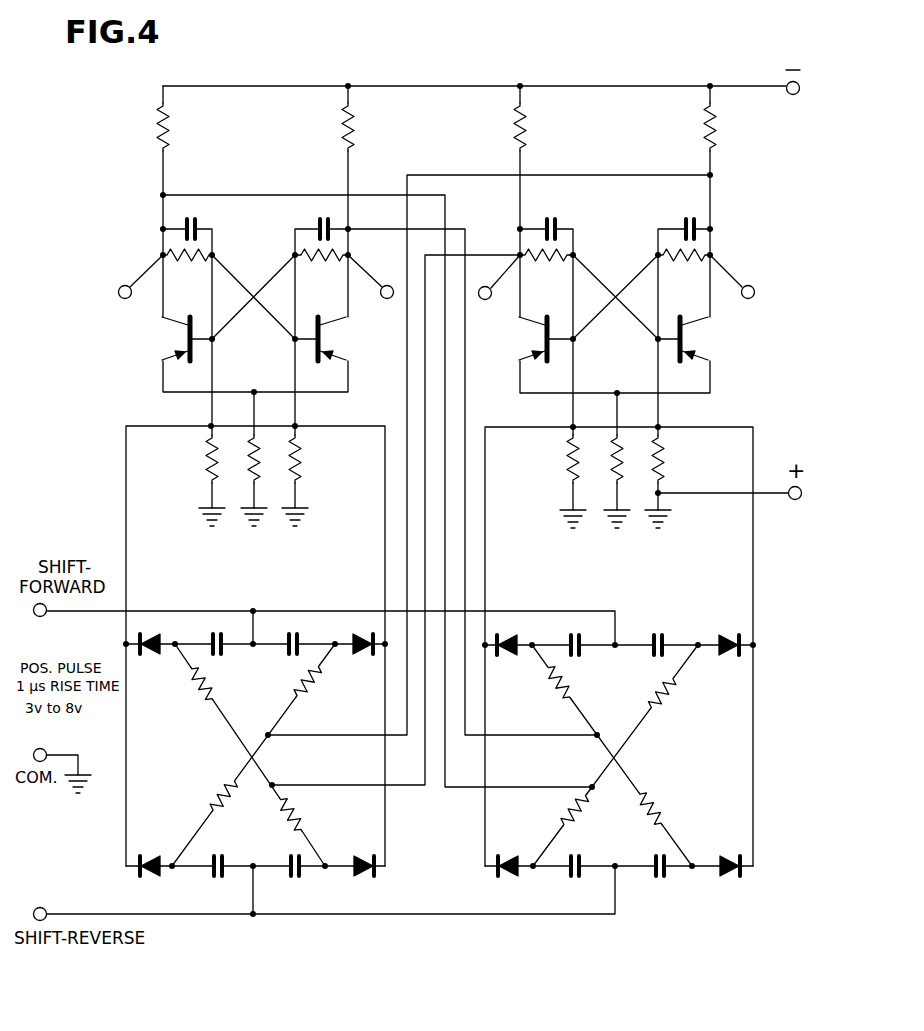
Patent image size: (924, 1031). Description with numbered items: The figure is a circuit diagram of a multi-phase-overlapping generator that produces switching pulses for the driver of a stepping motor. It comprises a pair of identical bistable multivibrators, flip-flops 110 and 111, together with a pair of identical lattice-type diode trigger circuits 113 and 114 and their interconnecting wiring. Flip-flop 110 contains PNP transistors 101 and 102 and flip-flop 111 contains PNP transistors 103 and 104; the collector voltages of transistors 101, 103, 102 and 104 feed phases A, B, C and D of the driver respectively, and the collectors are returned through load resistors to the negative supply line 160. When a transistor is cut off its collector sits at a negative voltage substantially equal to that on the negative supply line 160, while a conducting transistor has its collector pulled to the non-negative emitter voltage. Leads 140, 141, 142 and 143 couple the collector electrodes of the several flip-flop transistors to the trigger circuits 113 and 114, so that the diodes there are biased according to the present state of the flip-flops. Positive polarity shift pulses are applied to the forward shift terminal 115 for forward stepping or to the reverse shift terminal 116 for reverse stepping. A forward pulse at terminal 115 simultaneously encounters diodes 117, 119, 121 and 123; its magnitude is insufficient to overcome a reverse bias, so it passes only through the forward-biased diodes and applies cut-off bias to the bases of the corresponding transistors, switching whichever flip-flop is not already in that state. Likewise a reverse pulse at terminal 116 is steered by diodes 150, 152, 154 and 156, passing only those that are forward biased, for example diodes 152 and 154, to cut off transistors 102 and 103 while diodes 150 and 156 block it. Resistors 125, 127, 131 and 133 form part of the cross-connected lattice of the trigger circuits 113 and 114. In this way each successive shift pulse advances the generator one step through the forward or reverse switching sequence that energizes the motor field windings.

The negative supply line 160 is at (748, 88).
The flip-flop 110 is at (248, 260).
The flip-flop 111 is at (632, 260).
The PNP transistor 101 is at (170, 335).
The PNP transistor 102 is at (332, 340).
The PNP transistor 103 is at (537, 323).
The PNP transistor 104 is at (706, 346).
The lead 140 is at (407, 505).
The lead 141 is at (425, 540).
The lead 142 is at (445, 527).
The lead 143 is at (467, 576).
The forward shift terminal 115 is at (40, 617).
The reverse shift terminal 116 is at (40, 906).
The diode 117 is at (150, 634).
The diode 119 is at (363, 634).
The diode 121 is at (510, 634).
The diode 123 is at (726, 634).
The resistor 125 is at (197, 690).
The resistor 127 is at (327, 687).
The resistor 131 is at (572, 696).
The resistor R4 133 is at (675, 700).
The diode 150 is at (153, 875).
The diode 152 is at (360, 875).
The diode 154 is at (505, 878).
The diode 156 is at (723, 878).
The trigger circuit 113 is at (274, 667).
The trigger circuit 114 is at (632, 667).